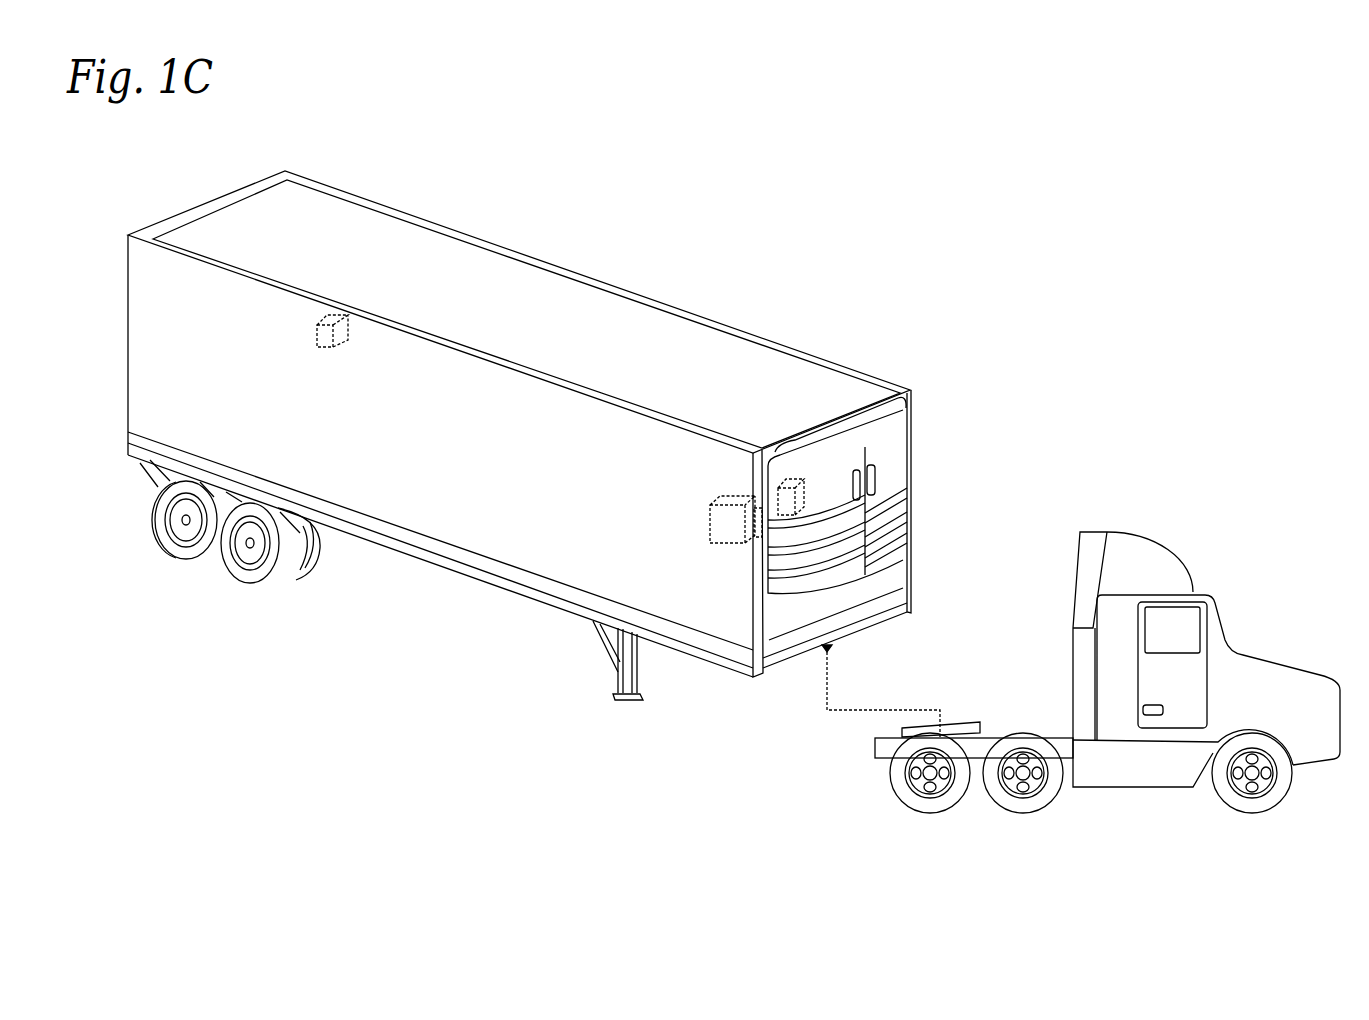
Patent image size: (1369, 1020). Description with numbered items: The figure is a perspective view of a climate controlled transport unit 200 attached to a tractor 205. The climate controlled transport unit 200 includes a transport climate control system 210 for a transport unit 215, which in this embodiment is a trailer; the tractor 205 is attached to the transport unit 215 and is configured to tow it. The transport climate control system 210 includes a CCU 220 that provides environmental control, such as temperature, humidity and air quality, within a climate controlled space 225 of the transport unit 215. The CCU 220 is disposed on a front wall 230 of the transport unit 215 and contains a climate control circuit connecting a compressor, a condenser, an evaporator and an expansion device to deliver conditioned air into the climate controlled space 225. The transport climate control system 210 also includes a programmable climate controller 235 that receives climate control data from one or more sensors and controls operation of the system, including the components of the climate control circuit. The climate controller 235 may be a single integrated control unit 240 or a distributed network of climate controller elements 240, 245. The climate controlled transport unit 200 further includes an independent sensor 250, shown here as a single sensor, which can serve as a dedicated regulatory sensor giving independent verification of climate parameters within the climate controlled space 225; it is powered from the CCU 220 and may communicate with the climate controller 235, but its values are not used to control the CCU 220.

The climate controlled transport unit 200 is at (547, 225).
The tractor 205 is at (1263, 660).
The transport climate control system 210 is at (962, 270).
The transport unit 215 is at (657, 298).
The CCU 220 is at (893, 450).
The climate controlled space 225 is at (520, 506).
The front wall 230 is at (912, 390).
The climate controller 235 is at (713, 518).
The single integrated control unit 240 is at (792, 520).
The climate controller element 245 is at (707, 604).
The independent sensor 250 is at (327, 346).